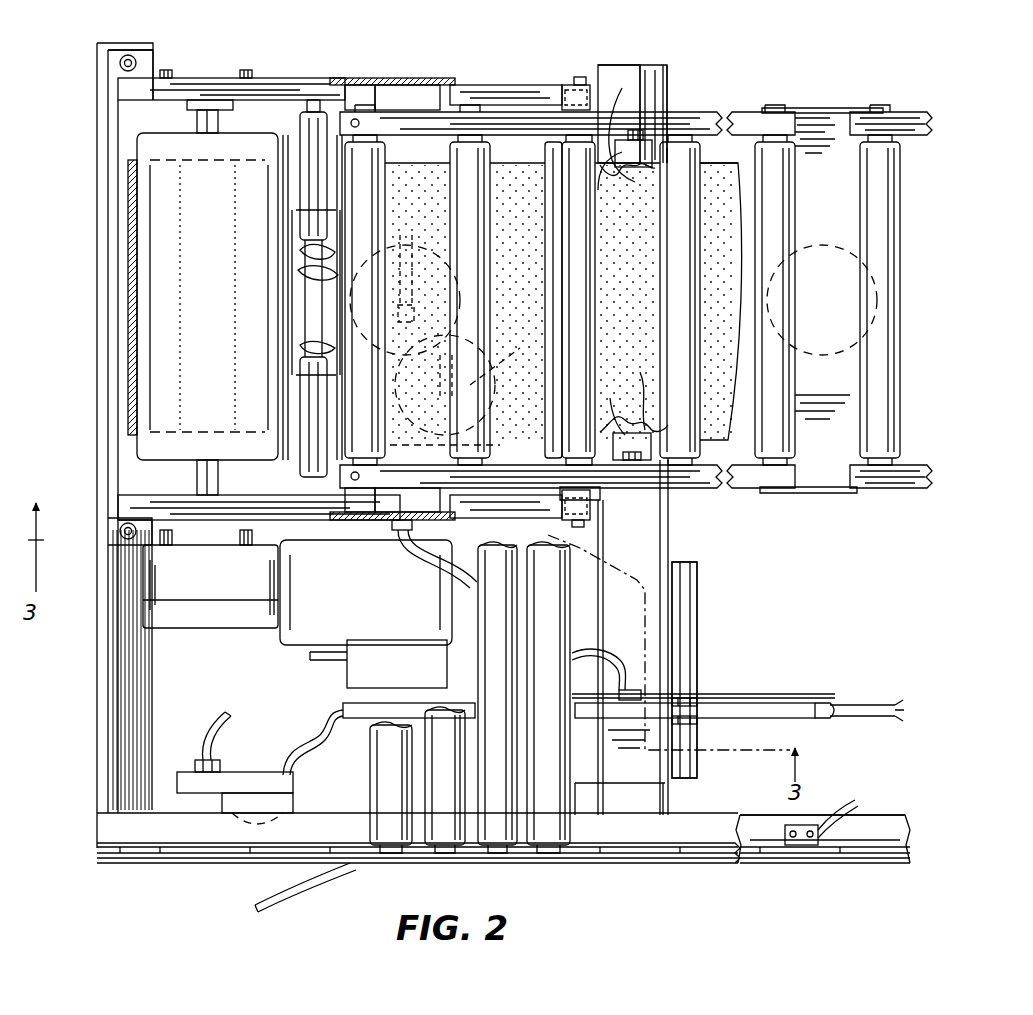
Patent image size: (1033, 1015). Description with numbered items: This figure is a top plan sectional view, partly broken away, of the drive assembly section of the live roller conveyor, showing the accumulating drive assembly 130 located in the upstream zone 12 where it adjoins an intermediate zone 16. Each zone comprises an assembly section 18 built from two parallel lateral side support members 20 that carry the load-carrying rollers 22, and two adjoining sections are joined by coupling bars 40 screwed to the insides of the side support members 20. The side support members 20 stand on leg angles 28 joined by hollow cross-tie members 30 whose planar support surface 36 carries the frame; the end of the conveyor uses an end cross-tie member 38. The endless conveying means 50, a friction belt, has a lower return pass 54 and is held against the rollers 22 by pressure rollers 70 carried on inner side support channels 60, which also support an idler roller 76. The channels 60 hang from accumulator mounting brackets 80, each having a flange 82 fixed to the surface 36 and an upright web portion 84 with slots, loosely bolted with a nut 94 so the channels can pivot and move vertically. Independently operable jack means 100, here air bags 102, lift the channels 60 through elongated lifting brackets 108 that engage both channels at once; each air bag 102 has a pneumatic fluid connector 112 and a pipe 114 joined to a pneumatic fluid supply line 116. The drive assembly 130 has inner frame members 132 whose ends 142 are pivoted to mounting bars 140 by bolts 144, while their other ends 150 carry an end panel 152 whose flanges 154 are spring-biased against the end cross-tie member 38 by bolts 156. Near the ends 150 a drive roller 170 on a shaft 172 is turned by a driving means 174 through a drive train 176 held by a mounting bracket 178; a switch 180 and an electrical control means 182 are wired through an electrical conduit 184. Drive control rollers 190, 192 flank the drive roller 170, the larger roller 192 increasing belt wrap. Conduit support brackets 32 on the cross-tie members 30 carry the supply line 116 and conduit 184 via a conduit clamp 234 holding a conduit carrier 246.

The upstream zone 12 is at (770, 882).
The intermediate zone 16 is at (880, 874).
The assembly section 18 is at (351, 866).
The lateral side support member 20 is at (200, 860).
The load-carrying roller 22 is at (437, 832).
The leg angle 28 is at (580, 805).
The cross-tie member 30 is at (675, 83).
The conduit support bracket 32 is at (697, 646).
The planar support surface 36 is at (650, 78).
The end cross-tie member 38 is at (128, 43).
The coupling bar 40 is at (830, 812).
The endless conveying means 50 is at (130, 260).
The lower return pass 54 is at (504, 261).
The inner side support channel 60 is at (745, 118).
The pressure roller 70 is at (478, 160).
The idler roller 76 is at (548, 150).
The accumulator mounting bracket 80 is at (655, 170).
The flange 82 is at (640, 165).
The web portion 84 is at (640, 380).
The nut 94 is at (614, 192).
The jack means 100 is at (420, 142).
The air bag 102 is at (503, 343).
The lifting bracket 108 is at (410, 95).
The pneumatic fluid connector 112 is at (498, 378).
The pneumatic fluid pipe 114 is at (480, 322).
The pneumatic fluid supply line 116 is at (462, 566).
The accumulating drive assembly 130 is at (645, 60).
The drive assembly inner frame member 132 is at (350, 80).
The mounting bar 140 is at (640, 66).
The end 142 is at (556, 88).
The bolt 144 is at (577, 77).
The other end 150 is at (143, 88).
The end panel 152 is at (108, 335).
The flange 154 is at (143, 62).
The bolt 156 is at (131, 56).
The drive roller 170 is at (238, 140).
The shaft 172 is at (197, 478).
The driving means 174 is at (302, 632).
The drive train 176 is at (233, 612).
The mounting bracket 178 is at (198, 525).
The switch 180 is at (243, 783).
The electrical control means 182 is at (383, 668).
The electrical conduit 184 is at (333, 702).
The drive control roller 190 is at (300, 120).
The drive control roller 192 is at (292, 345).
The conduit clamp 234 is at (690, 726).
The conduit carrier 246 is at (822, 718).